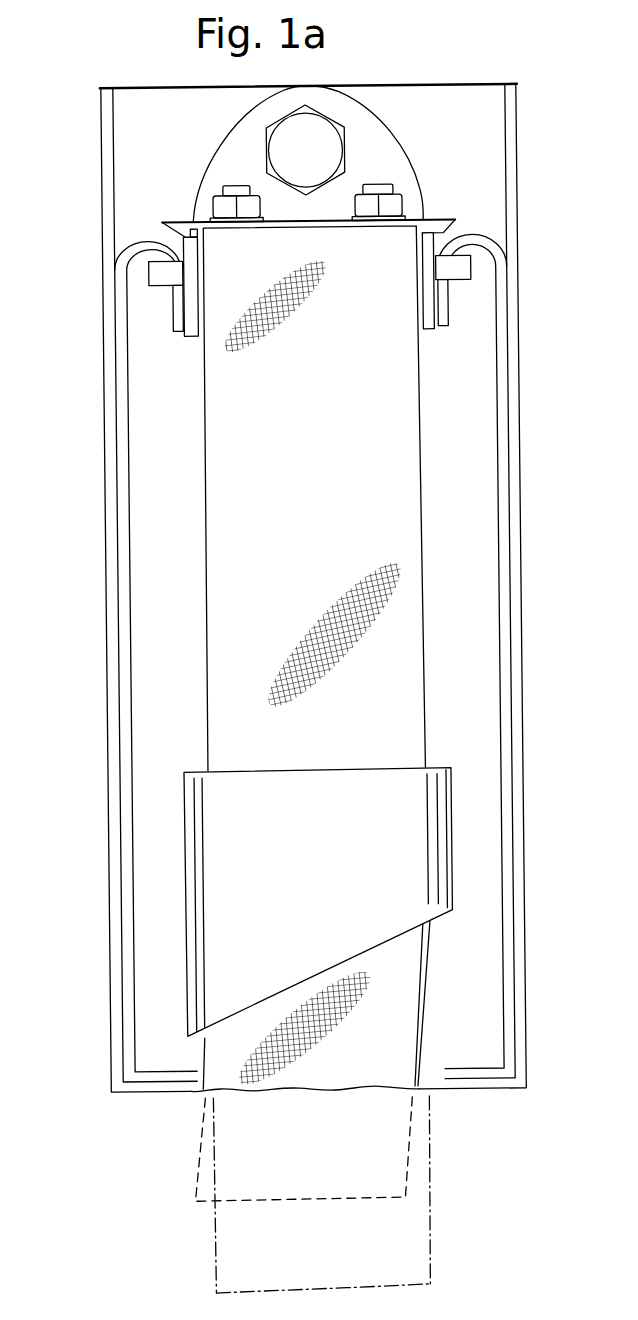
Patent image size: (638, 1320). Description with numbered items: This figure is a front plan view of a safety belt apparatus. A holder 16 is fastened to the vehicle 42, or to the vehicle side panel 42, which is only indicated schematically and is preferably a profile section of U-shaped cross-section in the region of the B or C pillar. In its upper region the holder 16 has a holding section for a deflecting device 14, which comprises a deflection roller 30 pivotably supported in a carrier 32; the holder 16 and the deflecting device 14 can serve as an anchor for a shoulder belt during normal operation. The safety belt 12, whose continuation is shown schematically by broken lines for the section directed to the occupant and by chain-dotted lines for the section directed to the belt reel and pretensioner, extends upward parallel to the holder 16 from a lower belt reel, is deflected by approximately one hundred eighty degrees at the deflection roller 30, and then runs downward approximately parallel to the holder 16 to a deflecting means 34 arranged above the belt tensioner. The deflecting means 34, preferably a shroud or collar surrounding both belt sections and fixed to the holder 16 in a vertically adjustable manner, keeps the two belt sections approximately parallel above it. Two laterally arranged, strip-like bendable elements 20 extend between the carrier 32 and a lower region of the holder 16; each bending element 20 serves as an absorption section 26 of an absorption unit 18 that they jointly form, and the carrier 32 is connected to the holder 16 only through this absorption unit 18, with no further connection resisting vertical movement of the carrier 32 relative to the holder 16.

The safety belt 12 is at (432, 507).
The deflecting device 14 is at (470, 214).
The holder 16 is at (230, 159).
The absorption unit 18 is at (106, 466).
The bendable element 20 is at (315, 653).
The absorption section 26 is at (119, 609).
The deflection roller 30 is at (467, 267).
The carrier 32 is at (430, 315).
The deflecting means 34 is at (411, 843).
The vehicle side panel 42 is at (483, 137).